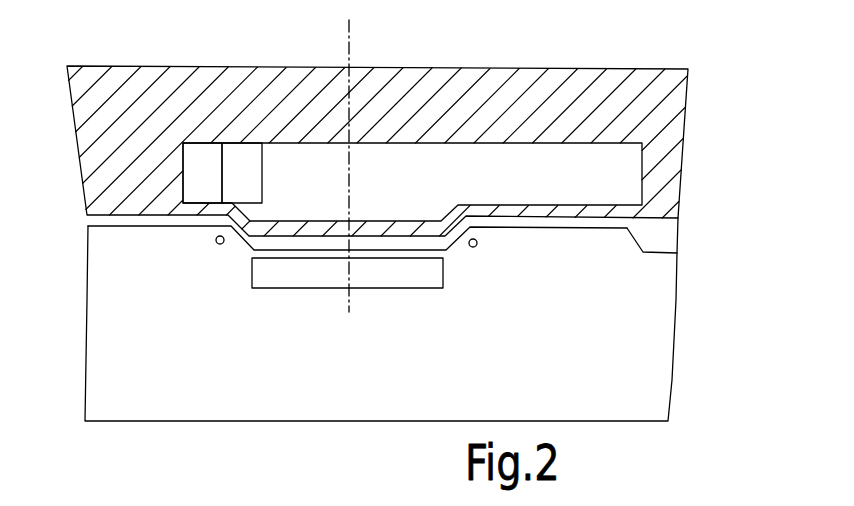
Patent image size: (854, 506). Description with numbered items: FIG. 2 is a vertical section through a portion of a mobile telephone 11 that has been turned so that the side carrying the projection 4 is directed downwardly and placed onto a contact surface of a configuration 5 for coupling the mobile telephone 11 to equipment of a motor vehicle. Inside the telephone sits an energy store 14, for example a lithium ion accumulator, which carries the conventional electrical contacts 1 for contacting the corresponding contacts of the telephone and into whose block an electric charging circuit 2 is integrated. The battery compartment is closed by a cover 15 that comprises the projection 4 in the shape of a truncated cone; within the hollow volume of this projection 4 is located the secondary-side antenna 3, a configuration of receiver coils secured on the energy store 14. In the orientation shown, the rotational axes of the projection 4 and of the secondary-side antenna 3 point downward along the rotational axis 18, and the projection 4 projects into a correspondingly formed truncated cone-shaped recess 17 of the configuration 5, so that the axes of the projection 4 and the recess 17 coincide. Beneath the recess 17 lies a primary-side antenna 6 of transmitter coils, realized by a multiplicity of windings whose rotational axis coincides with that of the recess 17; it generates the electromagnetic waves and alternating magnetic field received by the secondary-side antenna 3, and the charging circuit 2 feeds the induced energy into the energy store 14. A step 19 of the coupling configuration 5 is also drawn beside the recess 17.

The first sensor element 1 is at (210, 188).
The second sensor element 2 is at (250, 188).
The membrane 3 is at (440, 218).
The contact point 4 is at (450, 234).
The substrate 5 is at (122, 255).
The electrode 6 is at (258, 280).
The housing body 11 is at (653, 82).
The cavity 14 is at (630, 155).
The layer 15 is at (677, 222).
The contact point 17 is at (233, 242).
The center axis 18 is at (349, 35).
The step 19 is at (677, 253).